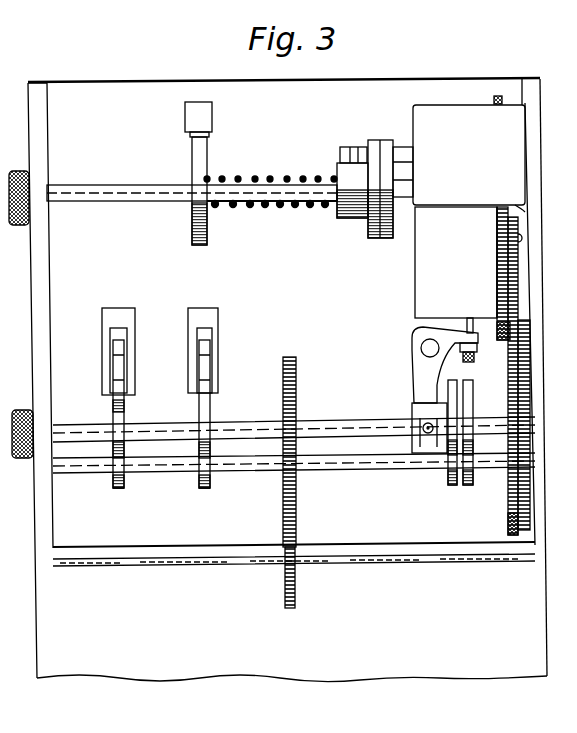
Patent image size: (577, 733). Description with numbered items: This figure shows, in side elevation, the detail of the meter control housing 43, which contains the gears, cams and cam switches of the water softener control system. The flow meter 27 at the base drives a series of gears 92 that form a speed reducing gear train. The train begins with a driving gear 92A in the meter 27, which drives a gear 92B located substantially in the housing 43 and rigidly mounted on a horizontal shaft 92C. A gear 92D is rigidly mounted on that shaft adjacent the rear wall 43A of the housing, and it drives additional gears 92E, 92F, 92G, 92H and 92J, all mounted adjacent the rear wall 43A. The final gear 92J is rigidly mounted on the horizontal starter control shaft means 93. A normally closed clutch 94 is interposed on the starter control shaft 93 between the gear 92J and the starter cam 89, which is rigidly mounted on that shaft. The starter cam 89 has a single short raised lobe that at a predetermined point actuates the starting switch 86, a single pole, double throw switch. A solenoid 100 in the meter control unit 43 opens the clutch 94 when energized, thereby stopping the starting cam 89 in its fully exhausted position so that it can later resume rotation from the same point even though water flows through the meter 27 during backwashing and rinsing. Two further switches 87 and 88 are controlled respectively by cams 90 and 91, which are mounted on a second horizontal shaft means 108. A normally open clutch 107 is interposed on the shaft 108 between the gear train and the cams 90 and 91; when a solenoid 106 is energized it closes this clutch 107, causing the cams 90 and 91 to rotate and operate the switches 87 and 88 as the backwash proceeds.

The meter control housing 43 is at (201, 72).
The rear wall 43A is at (519, 80).
The flow meter 27 is at (128, 576).
The starting switch 86 is at (190, 115).
The starter cam 89 is at (200, 155).
The starter control shaft means 93 is at (137, 203).
The normally closed clutch 94 is at (377, 240).
The solenoid 100 is at (418, 113).
The final gear 92J is at (497, 95).
The solenoid 106 is at (415, 282).
The gear 92G is at (497, 232).
The gear 92H is at (497, 301).
The gear 92E is at (518, 535).
The gear 92D is at (522, 488).
The switch 87 is at (115, 310).
The switch 88 is at (202, 308).
The cam 90 is at (113, 404).
The cam 91 is at (199, 403).
The horizontal shaft means 108 is at (245, 427).
The horizontal shaft 92C is at (161, 500).
The gear 92B is at (296, 503).
The driving gear 92A is at (288, 610).
The series of gears 92 is at (443, 498).
The normally open clutch 107 is at (453, 480).
The gear 92F is at (481, 493).